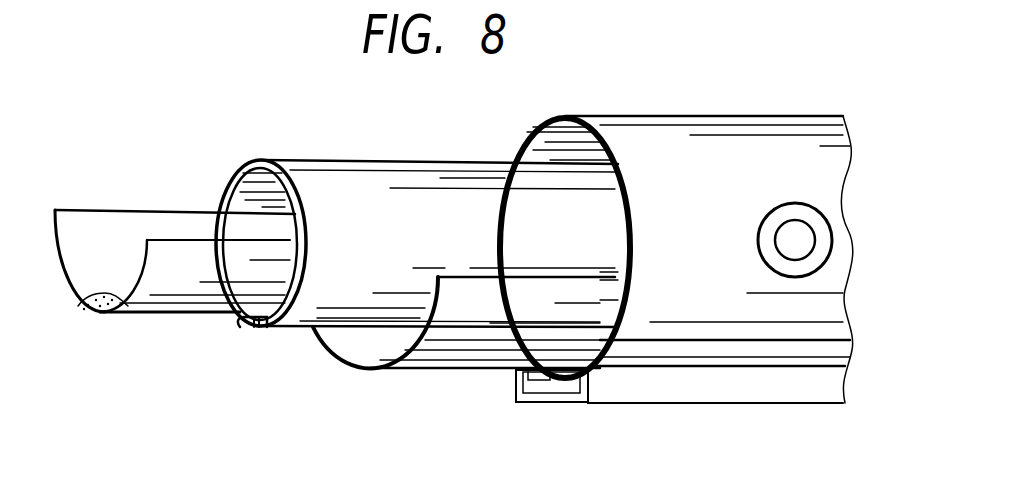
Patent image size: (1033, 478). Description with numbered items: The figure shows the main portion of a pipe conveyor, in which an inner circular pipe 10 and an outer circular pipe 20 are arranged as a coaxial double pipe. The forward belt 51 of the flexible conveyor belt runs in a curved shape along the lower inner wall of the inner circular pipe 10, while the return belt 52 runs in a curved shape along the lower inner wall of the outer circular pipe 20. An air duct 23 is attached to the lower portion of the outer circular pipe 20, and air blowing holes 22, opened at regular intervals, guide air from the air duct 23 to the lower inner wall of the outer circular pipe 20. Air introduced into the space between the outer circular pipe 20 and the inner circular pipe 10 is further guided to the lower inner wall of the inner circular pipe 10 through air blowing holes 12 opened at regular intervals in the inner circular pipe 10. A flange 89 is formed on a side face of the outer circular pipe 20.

The inner circular pipe 10 is at (401, 163).
The air blowing holes 12 is at (258, 328).
The outer circular pipe 20 is at (781, 116).
The air blowing holes 22 is at (548, 381).
The air duct 23 is at (725, 393).
The forward belt 51 is at (173, 316).
The return belt 52 is at (465, 371).
The flange 89 is at (795, 203).